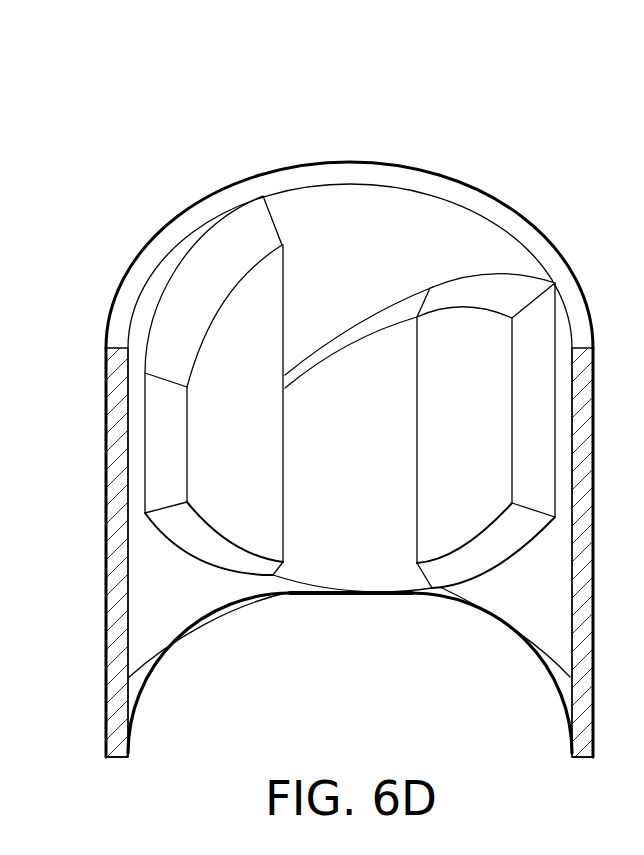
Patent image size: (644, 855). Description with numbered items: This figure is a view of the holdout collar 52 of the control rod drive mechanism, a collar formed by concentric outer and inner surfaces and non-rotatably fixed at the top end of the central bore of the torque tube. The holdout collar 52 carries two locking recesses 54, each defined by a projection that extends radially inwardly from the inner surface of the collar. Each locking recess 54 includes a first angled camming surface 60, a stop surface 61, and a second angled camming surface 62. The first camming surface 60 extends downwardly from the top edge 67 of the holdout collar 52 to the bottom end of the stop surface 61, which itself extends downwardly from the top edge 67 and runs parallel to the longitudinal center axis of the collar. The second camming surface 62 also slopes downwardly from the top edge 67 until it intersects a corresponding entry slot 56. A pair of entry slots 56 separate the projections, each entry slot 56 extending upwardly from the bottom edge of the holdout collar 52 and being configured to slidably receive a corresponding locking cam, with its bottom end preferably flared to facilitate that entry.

The holdout collar 52 is at (372, 396).
The locking recess 54 is at (348, 608).
The entry slot 56 is at (560, 437).
The first angled camming surface 60 is at (372, 320).
The stop surface 61 is at (285, 262).
The second angled camming surface 62 is at (217, 273).
The top edge 67 is at (558, 260).